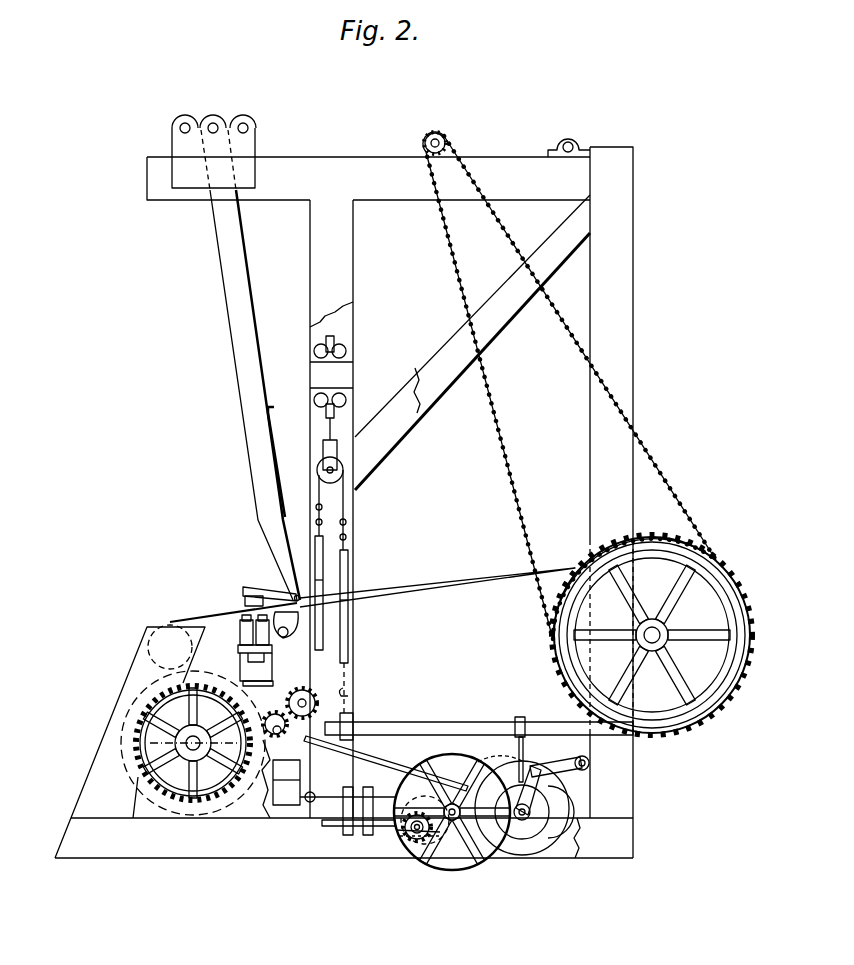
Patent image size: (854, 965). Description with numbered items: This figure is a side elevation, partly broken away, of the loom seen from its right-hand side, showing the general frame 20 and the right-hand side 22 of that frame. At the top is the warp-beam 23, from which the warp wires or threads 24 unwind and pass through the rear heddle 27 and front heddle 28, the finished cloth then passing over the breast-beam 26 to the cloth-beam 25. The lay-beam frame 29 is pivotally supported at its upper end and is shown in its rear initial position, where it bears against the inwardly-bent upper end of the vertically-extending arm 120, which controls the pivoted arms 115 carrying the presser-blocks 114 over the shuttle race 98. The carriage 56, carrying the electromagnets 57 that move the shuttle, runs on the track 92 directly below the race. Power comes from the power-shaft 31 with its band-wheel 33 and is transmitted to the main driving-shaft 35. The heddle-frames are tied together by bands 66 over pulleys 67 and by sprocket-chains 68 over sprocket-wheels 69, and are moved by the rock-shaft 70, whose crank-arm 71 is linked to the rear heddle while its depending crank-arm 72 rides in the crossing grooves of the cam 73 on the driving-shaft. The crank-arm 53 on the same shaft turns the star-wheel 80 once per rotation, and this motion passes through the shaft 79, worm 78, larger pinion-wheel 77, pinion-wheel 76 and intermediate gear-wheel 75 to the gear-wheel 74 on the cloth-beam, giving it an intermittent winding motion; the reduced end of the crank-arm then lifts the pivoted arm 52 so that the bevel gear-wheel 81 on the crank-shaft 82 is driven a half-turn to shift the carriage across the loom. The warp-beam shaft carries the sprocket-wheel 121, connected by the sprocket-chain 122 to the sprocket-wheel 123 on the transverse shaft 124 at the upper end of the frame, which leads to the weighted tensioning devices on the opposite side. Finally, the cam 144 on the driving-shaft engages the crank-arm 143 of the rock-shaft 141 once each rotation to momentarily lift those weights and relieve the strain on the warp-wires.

The general frame 20 is at (604, 498).
The right-hand side of the frame 22 is at (245, 522).
The warp-beam 23 is at (652, 635).
The warp wires or threads 24 is at (445, 594).
The cloth-beam 25 is at (140, 700).
The breast-beam 26 is at (148, 650).
The rear heddle 27 is at (348, 573).
The front heddle 28 is at (323, 556).
The lay-beam frame 29 is at (240, 356).
The power-shaft 31 is at (447, 850).
The band-wheel 33 is at (425, 846).
The main driving-shaft 35 is at (519, 820).
The pivoted arm 52 is at (312, 805).
The crank-arm 53 is at (545, 794).
The carriage 56 is at (240, 650).
The electromagnets 57 is at (232, 622).
The bands 66 is at (346, 511).
The pulleys 67 is at (345, 484).
The sprocket-chains 68 is at (348, 692).
The sprocket-wheels 69 is at (372, 756).
The rock-shaft 70 is at (418, 722).
The crank-arm 71 is at (353, 716).
The depending crank-arm 72 is at (521, 716).
The cam 73 is at (525, 840).
The gear-wheel 74 is at (140, 758).
The intermediate gear-wheel 75 is at (280, 732).
The pinion-wheel 76 is at (313, 694).
The larger pinion-wheel 77 is at (296, 690).
The worm 78 is at (264, 798).
The shaft 79 is at (359, 800).
The star-wheel 80 is at (455, 850).
The bevel gear-wheel 81 is at (418, 836).
The crank-shaft 82 is at (412, 840).
The track 92 is at (243, 670).
The race 98 is at (247, 600).
The presser-blocks 114 is at (258, 588).
The pivoted arms 115 is at (278, 608).
The vertically-extending arm 120 is at (279, 458).
The sprocket-wheel 121 is at (688, 733).
The sprocket-chain 122 is at (680, 462).
The sprocket-wheel 123 is at (437, 152).
The shaft 124 is at (442, 135).
The rock-shaft 141 is at (589, 764).
The crank-arm 143 is at (556, 753).
The cam 144 is at (560, 826).